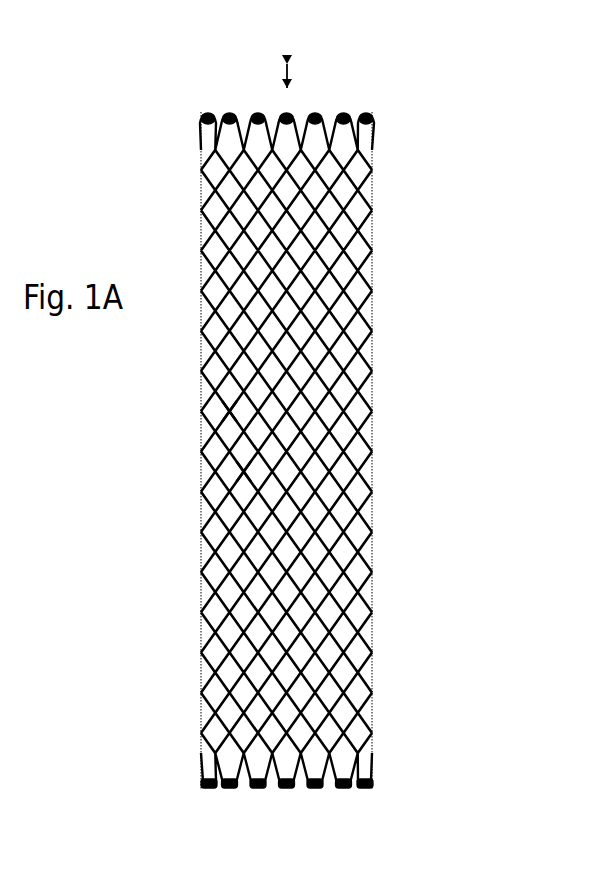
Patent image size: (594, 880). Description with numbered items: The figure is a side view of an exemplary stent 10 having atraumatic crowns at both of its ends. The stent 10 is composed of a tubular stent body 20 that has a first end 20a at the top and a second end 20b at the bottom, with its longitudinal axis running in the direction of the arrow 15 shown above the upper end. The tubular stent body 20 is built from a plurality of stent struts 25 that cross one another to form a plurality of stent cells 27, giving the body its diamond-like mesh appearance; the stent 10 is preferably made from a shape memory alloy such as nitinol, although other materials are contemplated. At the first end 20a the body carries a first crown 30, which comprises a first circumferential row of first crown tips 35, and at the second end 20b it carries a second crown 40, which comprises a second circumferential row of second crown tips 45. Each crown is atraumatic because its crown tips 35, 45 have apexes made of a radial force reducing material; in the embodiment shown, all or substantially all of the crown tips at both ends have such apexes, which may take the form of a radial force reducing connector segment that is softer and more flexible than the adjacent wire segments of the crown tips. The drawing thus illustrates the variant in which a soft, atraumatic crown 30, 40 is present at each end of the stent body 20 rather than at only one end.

The stent 10 is at (345, 448).
The arrow 15 is at (308, 74).
The tubular stent body 20 is at (373, 438).
The first end 20a is at (373, 168).
The second end 20b is at (373, 730).
The stent strut 25 is at (222, 412).
The stent cell 27 is at (230, 469).
The first crown 30 is at (190, 110).
The first crown tips 35 is at (243, 80).
The second crown 40 is at (190, 757).
The second crown tips 45 is at (249, 817).